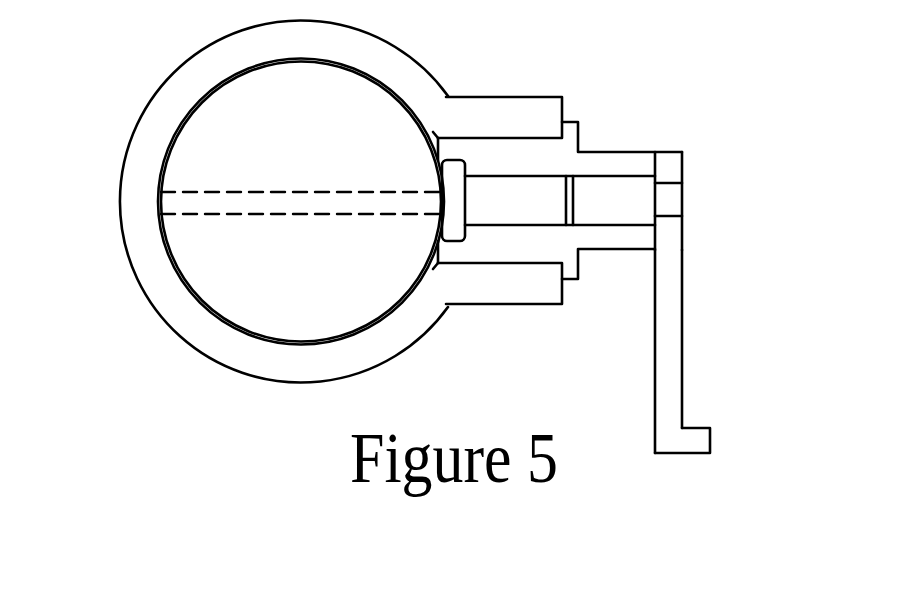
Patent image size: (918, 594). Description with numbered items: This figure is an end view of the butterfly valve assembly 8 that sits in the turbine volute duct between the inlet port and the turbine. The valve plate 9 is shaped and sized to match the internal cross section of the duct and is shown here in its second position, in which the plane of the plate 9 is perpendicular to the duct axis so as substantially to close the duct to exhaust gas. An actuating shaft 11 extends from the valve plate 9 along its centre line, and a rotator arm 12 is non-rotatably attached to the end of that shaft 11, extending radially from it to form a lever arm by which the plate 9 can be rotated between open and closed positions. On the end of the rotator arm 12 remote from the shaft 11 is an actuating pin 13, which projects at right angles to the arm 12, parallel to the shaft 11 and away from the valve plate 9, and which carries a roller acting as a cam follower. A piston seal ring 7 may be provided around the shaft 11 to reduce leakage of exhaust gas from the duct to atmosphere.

The pin 7 is at (578, 177).
The butterfly valve assembly 8 is at (420, 283).
The valve plate 9 is at (230, 168).
The actuating shaft 11 is at (640, 188).
The rotator arm 12 is at (683, 313).
The actuating pin 13 is at (710, 441).